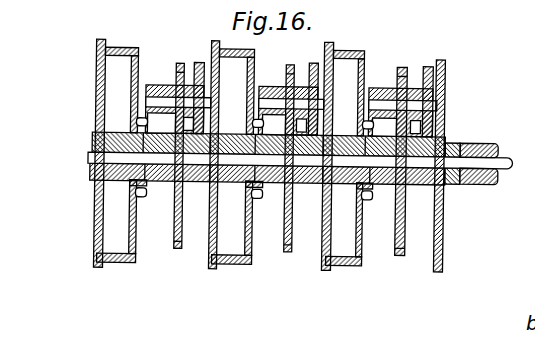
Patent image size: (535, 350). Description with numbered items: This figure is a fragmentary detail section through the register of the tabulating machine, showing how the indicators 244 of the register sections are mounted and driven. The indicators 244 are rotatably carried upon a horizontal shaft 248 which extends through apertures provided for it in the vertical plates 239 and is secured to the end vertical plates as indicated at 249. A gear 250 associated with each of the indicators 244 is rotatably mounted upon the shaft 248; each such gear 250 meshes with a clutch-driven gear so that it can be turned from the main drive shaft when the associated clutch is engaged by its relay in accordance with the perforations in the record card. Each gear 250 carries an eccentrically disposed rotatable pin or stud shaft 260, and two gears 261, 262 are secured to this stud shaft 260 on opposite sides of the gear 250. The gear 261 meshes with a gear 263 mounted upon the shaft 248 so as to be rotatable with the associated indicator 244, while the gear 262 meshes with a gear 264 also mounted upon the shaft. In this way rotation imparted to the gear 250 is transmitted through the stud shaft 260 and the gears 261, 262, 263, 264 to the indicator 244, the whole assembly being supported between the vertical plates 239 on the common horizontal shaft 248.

The vertical plate 239 is at (97, 232).
The indicator 244 is at (137, 264).
The horizontal shaft 248 is at (460, 150).
The shaft securing means 249 is at (458, 184).
The gear 250 is at (183, 228).
The stud shaft 260 is at (165, 87).
The gear 261 is at (147, 85).
The gear 262 is at (197, 63).
The gear 263 is at (134, 196).
The gear 264 is at (218, 120).